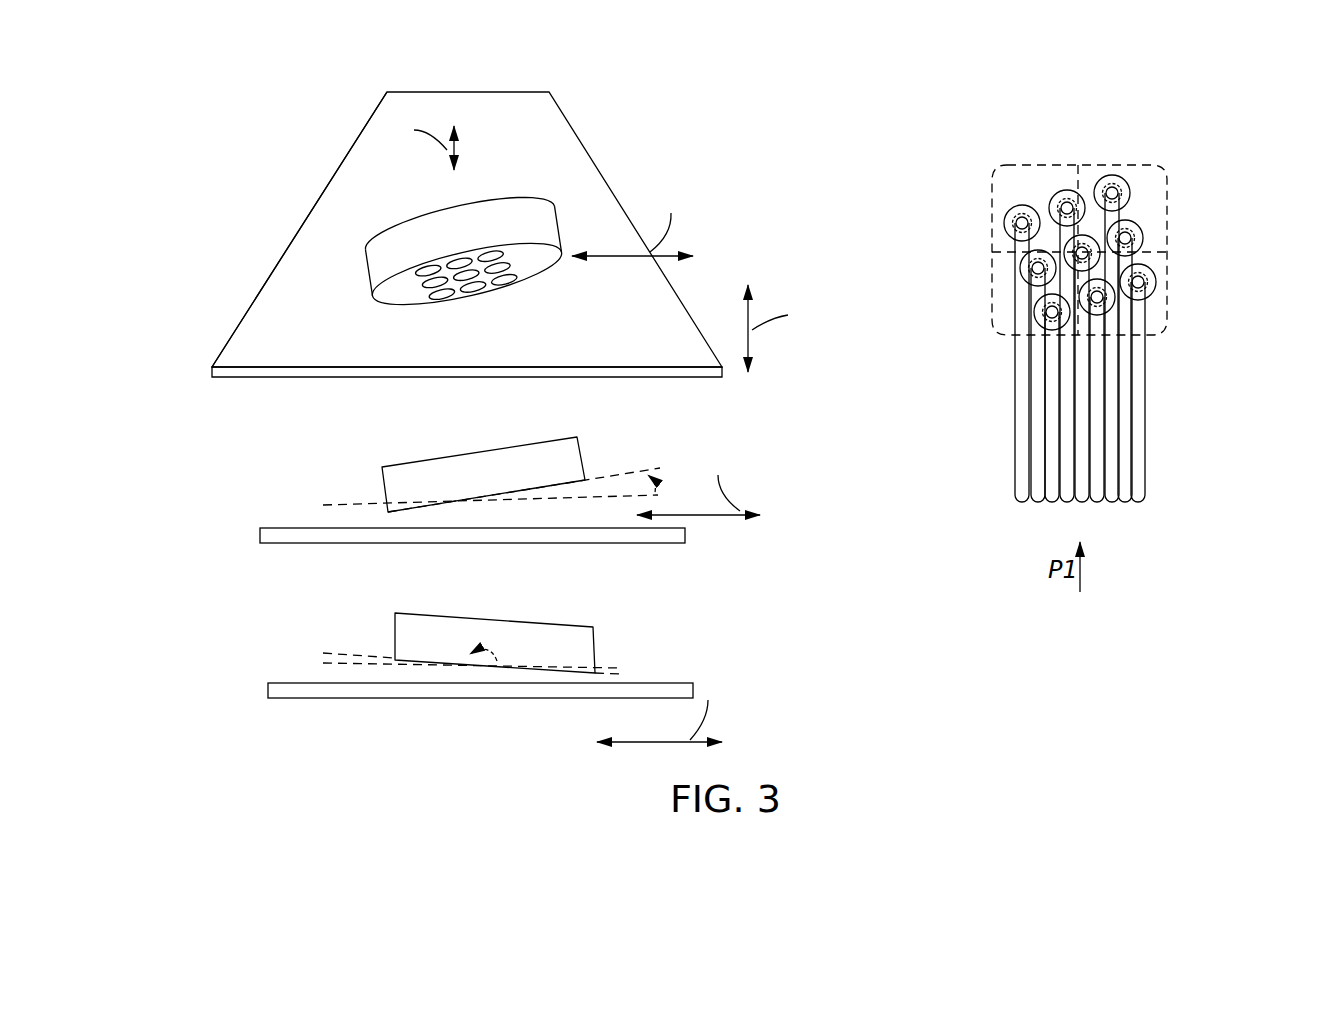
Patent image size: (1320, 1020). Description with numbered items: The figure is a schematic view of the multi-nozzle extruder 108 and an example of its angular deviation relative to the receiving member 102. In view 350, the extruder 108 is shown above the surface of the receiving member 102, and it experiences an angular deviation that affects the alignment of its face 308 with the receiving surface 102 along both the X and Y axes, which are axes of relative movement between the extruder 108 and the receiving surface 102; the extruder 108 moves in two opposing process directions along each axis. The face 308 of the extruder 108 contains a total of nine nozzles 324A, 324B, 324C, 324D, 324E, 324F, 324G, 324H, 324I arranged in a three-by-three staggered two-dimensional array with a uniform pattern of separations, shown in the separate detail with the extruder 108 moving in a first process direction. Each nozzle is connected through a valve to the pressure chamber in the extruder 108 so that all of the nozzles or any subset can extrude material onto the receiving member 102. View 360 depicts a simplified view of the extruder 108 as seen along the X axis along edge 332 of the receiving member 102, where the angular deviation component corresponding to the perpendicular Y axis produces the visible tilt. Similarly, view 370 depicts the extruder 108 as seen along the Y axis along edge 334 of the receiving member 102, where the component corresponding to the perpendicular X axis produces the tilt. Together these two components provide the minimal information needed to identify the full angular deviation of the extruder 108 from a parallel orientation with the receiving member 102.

The receiving member 102 is at (538, 142).
The multi-nozzle extruder 108 is at (340, 205).
The face of the extruder 308 is at (381, 292).
The nozzle 324A is at (1003, 225).
The nozzle 324B is at (1020, 271).
The nozzle 324C is at (1030, 316).
The nozzle 324D is at (1050, 205).
The nozzle 324E is at (1157, 281).
The nozzle 324F is at (1102, 310).
The nozzle 324G is at (1110, 176).
The nozzle 324H is at (1145, 232).
The nozzle 324I is at (1150, 300).
The edge of the receiving member 332 is at (312, 380).
The edge of the receiving member 334 is at (246, 310).
The view 350 is at (720, 160).
The view 360 is at (785, 478).
The view 370 is at (785, 648).